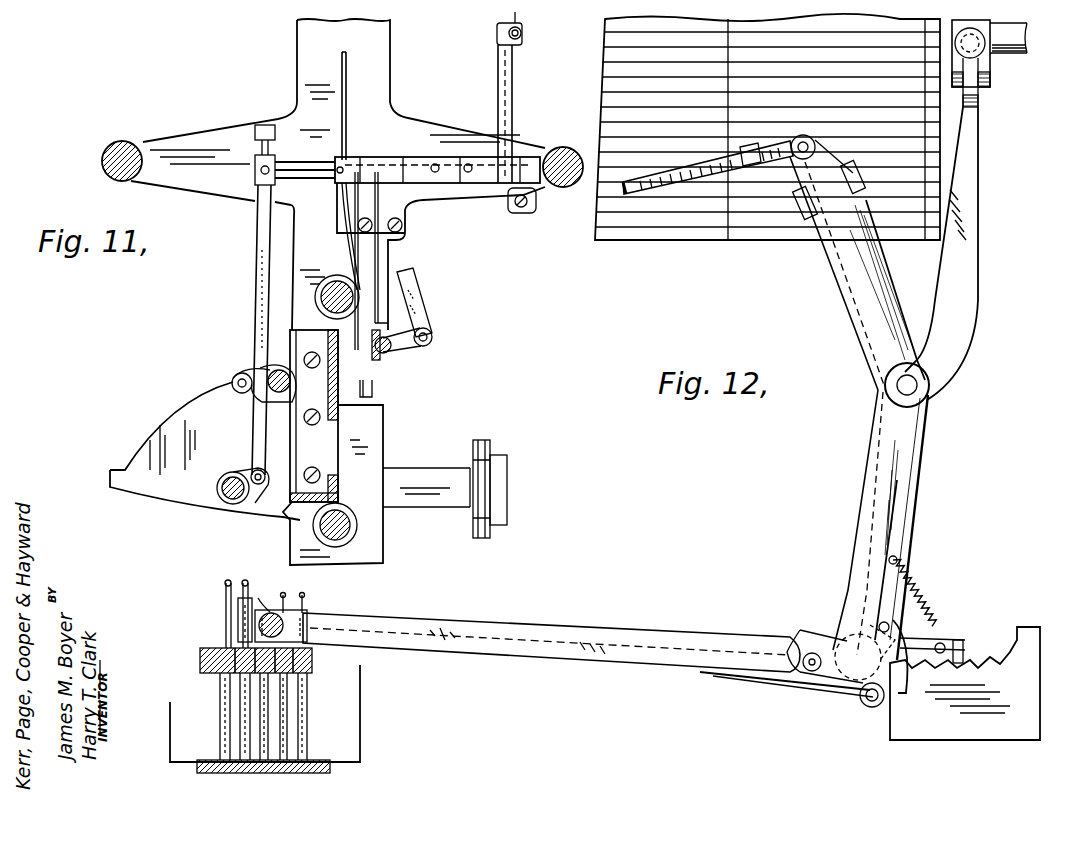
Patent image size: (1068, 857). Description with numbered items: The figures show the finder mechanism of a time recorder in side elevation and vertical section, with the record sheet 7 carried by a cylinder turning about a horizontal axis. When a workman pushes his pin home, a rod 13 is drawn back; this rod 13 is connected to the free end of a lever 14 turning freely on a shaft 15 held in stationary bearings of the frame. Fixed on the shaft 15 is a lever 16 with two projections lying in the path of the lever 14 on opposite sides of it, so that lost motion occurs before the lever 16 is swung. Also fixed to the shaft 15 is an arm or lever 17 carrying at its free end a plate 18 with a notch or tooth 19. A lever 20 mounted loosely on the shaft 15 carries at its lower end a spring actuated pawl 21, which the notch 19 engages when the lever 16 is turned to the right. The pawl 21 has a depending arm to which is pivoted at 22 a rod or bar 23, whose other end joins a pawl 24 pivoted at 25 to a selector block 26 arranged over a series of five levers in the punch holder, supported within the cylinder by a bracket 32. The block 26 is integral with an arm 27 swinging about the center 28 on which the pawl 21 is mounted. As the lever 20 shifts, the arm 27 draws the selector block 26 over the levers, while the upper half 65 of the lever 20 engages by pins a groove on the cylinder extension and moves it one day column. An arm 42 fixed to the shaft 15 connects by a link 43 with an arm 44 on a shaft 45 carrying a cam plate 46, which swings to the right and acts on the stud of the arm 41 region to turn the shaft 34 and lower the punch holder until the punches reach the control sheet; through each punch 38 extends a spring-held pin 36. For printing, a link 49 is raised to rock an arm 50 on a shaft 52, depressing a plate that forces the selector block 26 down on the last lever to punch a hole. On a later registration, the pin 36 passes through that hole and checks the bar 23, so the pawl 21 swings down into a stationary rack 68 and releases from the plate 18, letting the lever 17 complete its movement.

In FIG. 12, the record sheet 7 is at (746, 240).
In FIG. 12, the rod 13 is at (663, 195).
In FIG. 11, the lever 14 is at (514, 75).
In FIG. 12, the lever 14 is at (847, 292).
In FIG. 11, the shaft 15 is at (313, 178).
In FIG. 12, the shaft 15 is at (907, 386).
In FIG. 11, the lever 16 is at (500, 76).
In FIG. 12, the lever 16 is at (897, 281).
In FIG. 12, the arm or lever 17 is at (881, 431).
In FIG. 12, the plate 18 is at (812, 623).
In FIG. 12, the notch or tooth 19 is at (905, 696).
In FIG. 12, the lever 20 is at (919, 477).
In FIG. 12, the spring actuated pawl 21 is at (958, 644).
In FIG. 12, the pivot 22 is at (873, 707).
In FIG. 12, the rod or bar 23 is at (816, 690).
In FIG. 11, the pawl 24 is at (284, 596).
In FIG. 11, the pivot 25 is at (310, 656).
In FIG. 11, the selector block 26 is at (243, 632).
In FIG. 11, the arm 27 is at (626, 626).
In FIG. 12, the center 28 is at (899, 639).
In FIG. 11, the bracket 32 is at (340, 413).
In FIG. 11, the shaft 34 is at (270, 393).
In FIG. 11, the pin 36 is at (305, 605).
In FIG. 11, the punch 38 is at (298, 732).
In FIG. 11, the pivot 41 is at (246, 358).
In FIG. 11, the arm 42 is at (256, 150).
In FIG. 11, the link 43 is at (262, 312).
In FIG. 11, the arm 44 is at (258, 487).
In FIG. 11, the shaft 45 is at (232, 500).
In FIG. 11, the cam plate 46 is at (150, 495).
In FIG. 11, the link 49 is at (421, 300).
In FIG. 11, the arm 50 is at (424, 348).
In FIG. 11, the shaft 52 is at (385, 355).
In FIG. 11, the upper half of lever 65 is at (345, 96).
In FIG. 12, the upper half of lever 65 is at (966, 306).
In FIG. 12, the stationary rack 68 is at (988, 667).